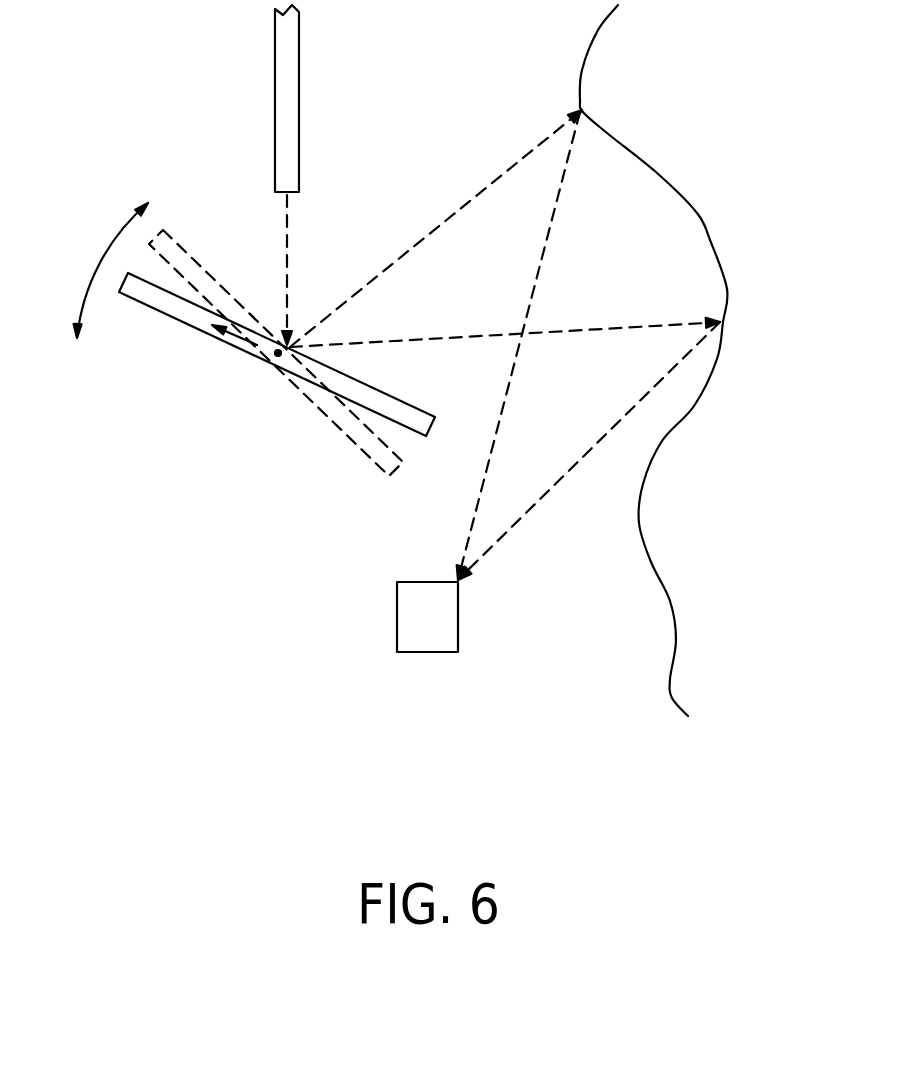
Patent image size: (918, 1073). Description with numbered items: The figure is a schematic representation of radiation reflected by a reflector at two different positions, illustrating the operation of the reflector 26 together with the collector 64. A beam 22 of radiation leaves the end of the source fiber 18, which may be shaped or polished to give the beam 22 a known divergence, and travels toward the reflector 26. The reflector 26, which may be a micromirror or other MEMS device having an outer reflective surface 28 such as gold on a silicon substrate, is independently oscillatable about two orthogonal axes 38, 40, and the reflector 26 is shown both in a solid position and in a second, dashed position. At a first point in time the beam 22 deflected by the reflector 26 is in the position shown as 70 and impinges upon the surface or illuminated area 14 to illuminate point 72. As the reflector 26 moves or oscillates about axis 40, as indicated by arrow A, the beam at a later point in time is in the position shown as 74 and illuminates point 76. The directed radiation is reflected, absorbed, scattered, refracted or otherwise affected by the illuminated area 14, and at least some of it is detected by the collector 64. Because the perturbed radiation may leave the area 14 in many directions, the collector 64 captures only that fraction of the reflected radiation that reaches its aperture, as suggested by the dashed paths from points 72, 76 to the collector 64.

The surface or illuminated area 14 is at (693, 210).
The source fiber 18 is at (292, 103).
The beam 22 is at (288, 215).
The reflector 26 is at (140, 302).
The outer reflective surface 28 is at (390, 393).
The axis 38 is at (230, 333).
The axis 40 is at (266, 371).
The collector 64 is at (427, 647).
The beam position 70 is at (473, 195).
The illuminated point 72 is at (583, 110).
The beam position 74 is at (430, 337).
The illuminated point 76 is at (719, 322).
The arrow A is at (98, 262).